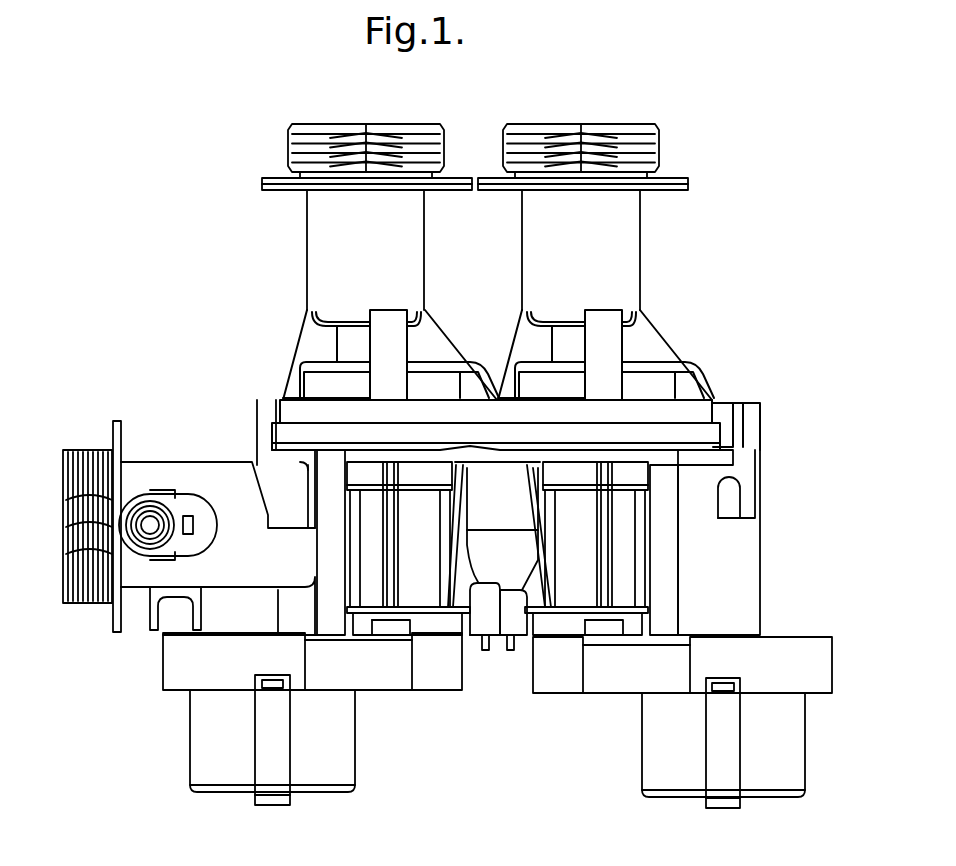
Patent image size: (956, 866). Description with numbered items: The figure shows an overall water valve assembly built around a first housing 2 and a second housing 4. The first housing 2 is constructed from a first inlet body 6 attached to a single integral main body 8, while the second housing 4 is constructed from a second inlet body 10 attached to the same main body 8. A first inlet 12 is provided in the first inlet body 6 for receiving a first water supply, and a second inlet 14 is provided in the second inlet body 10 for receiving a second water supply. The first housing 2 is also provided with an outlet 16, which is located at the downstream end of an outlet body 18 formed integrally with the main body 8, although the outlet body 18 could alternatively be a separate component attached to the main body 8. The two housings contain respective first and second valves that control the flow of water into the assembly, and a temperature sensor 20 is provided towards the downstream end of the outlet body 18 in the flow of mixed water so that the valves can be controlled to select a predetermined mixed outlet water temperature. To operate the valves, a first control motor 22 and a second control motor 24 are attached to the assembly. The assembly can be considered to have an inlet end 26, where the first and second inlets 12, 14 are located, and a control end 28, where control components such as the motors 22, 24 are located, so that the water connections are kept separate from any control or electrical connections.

The first housing 2 is at (406, 580).
The second housing 4 is at (626, 568).
The first inlet body 6 is at (330, 252).
The main body 8 is at (695, 547).
The second inlet body 10 is at (618, 255).
The first inlet 12 is at (358, 110).
The second inlet 14 is at (586, 116).
The outlet 16 is at (58, 530).
The outlet body 18 is at (228, 497).
The temperature sensor 20 is at (152, 519).
The first control motor 22 is at (213, 770).
The second control motor 24 is at (790, 762).
The inlet end 26 is at (516, 351).
The control end 28 is at (497, 678).